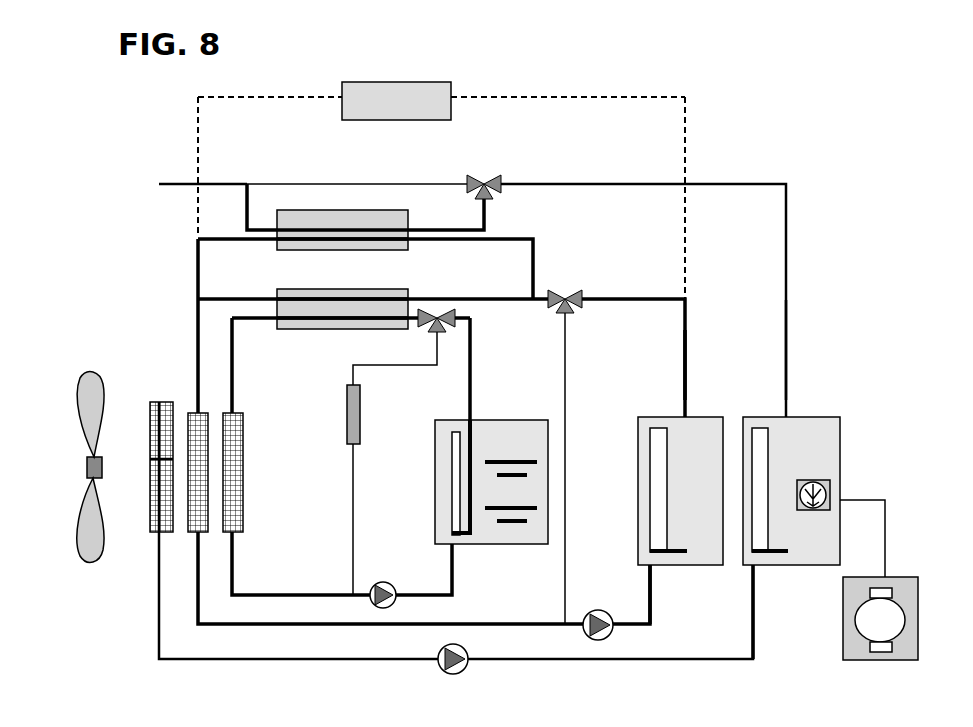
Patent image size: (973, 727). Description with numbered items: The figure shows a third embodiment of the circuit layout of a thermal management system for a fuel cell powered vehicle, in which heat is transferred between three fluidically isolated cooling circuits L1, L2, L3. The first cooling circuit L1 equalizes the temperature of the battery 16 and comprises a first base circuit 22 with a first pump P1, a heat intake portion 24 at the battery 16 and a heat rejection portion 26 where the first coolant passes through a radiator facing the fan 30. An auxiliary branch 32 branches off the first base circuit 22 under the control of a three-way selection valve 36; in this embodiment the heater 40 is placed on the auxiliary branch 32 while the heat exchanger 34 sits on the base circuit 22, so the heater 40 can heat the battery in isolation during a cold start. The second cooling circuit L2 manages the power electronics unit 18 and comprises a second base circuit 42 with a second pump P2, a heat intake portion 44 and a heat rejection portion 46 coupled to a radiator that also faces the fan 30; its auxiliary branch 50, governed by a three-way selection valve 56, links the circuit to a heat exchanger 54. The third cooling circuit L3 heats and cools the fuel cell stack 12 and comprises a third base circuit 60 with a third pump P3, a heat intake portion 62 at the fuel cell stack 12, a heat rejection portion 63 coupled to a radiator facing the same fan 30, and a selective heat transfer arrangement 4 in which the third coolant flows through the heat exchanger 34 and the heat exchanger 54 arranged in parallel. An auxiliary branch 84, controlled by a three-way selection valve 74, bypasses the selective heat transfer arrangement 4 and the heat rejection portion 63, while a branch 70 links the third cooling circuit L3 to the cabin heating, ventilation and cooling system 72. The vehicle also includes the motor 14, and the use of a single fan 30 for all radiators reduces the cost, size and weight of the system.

The heating, ventilation and cooling system (HVAC) 72 is at (396, 101).
The branch 70 is at (688, 162).
The second base circuit 42 is at (580, 184).
The second cooling circuit L2 is at (800, 341).
The heat intake portion 44 is at (778, 554).
The selection valve 56 is at (486, 180).
The auxiliary branch 50 is at (247, 230).
The heat exchanger 54 is at (342, 229).
The third base circuit 60 is at (612, 299).
The selective heat transfer arrangement 4 is at (310, 287).
The heat exchanger 34 is at (342, 309).
The heat rejection portion 63 is at (197, 413).
The third cooling circuit L3 is at (693, 354).
The selection valve 74 is at (567, 313).
The auxiliary branch 84 is at (566, 456).
The first base circuit 22 is at (255, 320).
The heat rejection portion 26 is at (243, 437).
The selection valve 36 is at (437, 333).
The first cooling circuit L1 is at (485, 381).
The heater 40 is at (360, 421).
The auxiliary branch 32 is at (353, 506).
The battery 16 is at (519, 417).
The heat intake portion 24 is at (452, 479).
The first pump P1 is at (393, 585).
The second pump P2 is at (442, 670).
The third pump P3 is at (585, 612).
The fuel cell stack 12 is at (668, 413).
The heat intake portion 62 is at (650, 512).
The power electronics unit 18 is at (795, 415).
The motor 14 is at (912, 575).
The heat rejection portion 46 is at (150, 522).
The fan 30 is at (93, 504).